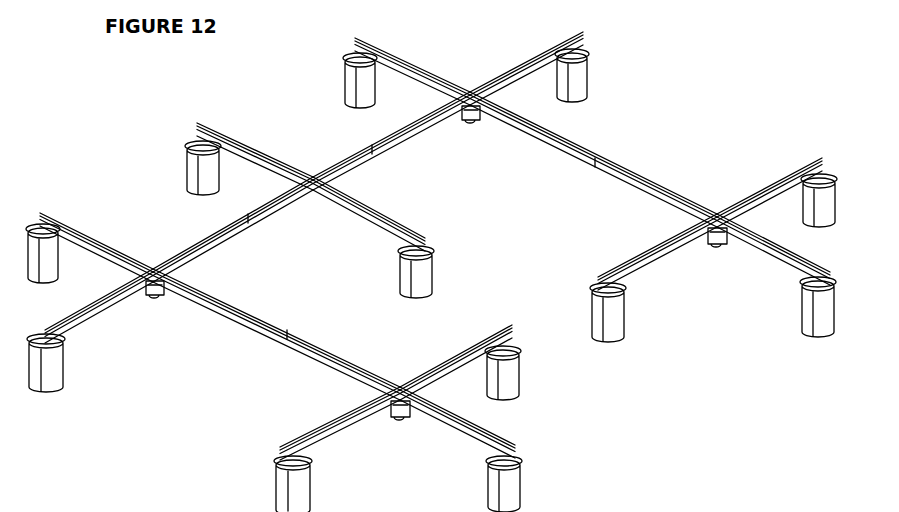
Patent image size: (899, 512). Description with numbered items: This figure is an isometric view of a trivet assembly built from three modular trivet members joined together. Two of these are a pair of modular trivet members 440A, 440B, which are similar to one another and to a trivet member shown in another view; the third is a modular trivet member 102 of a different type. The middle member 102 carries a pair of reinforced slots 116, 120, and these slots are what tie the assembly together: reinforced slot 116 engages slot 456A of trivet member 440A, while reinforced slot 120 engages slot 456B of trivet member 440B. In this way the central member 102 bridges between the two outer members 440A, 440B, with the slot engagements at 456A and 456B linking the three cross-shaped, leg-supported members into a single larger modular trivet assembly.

The modular trivet member 102 is at (390, 202).
The reinforced slot 116 is at (476, 120).
The reinforced slot 120 is at (162, 297).
The modular trivet member 440A is at (291, 387).
The modular trivet member 440B is at (697, 157).
The slot 456A is at (150, 276).
The slot 456B is at (452, 103).